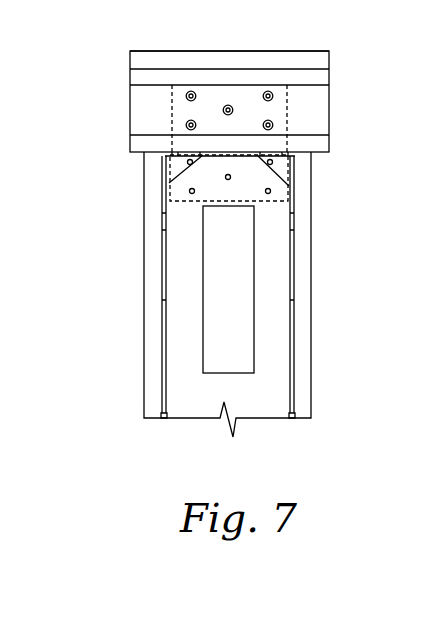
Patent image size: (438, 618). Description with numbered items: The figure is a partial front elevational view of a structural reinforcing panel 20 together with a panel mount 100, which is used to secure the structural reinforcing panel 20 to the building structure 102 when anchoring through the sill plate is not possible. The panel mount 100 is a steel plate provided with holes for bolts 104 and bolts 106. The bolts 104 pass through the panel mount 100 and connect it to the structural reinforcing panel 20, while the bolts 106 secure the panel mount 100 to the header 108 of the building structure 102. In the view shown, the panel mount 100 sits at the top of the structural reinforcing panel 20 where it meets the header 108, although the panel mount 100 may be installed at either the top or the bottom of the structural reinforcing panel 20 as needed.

The structural reinforcing panel 20 is at (278, 293).
The panel mount 100 is at (288, 121).
The building structure 102 is at (290, 52).
The bolts 104 is at (270, 192).
The bolts 106 is at (228, 106).
The header 108 is at (137, 103).